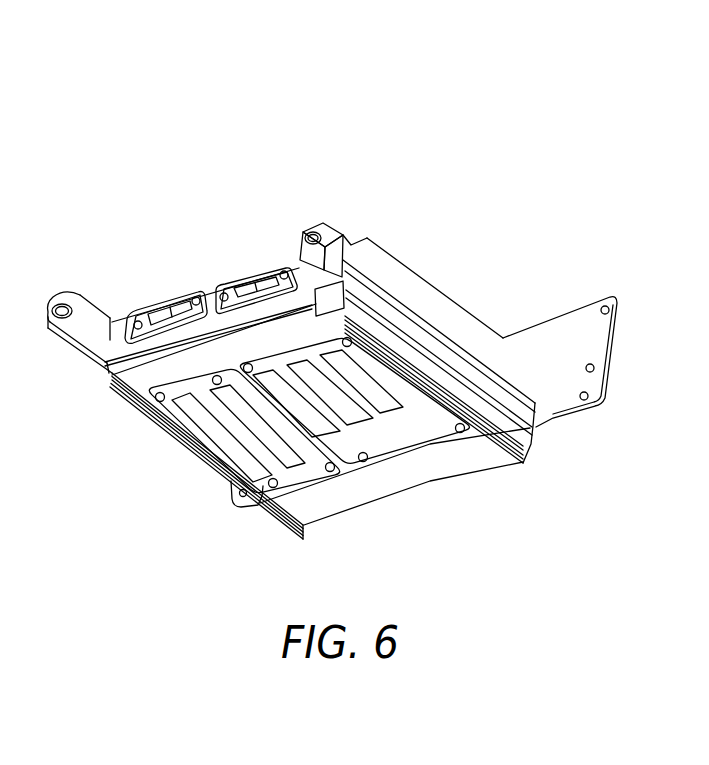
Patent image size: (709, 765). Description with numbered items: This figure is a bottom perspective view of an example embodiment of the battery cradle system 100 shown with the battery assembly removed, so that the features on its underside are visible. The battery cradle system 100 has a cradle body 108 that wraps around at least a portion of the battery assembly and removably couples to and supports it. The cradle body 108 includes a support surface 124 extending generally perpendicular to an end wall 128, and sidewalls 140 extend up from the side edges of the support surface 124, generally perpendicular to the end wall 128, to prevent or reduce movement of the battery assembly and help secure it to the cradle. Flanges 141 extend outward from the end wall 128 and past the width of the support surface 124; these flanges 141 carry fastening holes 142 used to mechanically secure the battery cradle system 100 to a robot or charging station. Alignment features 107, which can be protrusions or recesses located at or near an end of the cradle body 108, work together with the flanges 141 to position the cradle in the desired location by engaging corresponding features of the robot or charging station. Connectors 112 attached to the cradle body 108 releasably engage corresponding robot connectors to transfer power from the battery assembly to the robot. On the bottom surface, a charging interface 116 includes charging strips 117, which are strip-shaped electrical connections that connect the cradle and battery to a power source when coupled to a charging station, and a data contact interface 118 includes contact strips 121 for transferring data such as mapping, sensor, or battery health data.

The battery cradle system 100 is at (433, 50).
The alignment features 107 is at (52, 348).
The cradle body 108 is at (505, 505).
The connectors 112 is at (148, 312).
The charging interfaces 116 is at (226, 478).
The charging strips 117 is at (212, 408).
The data contact interfaces 118 is at (436, 447).
The contact strips 121 is at (420, 405).
The support surface 124 is at (125, 382).
The end wall 128 is at (547, 417).
The sidewalls 140 is at (450, 327).
The flanges 141 is at (612, 362).
The fastening holes 142 is at (589, 364).